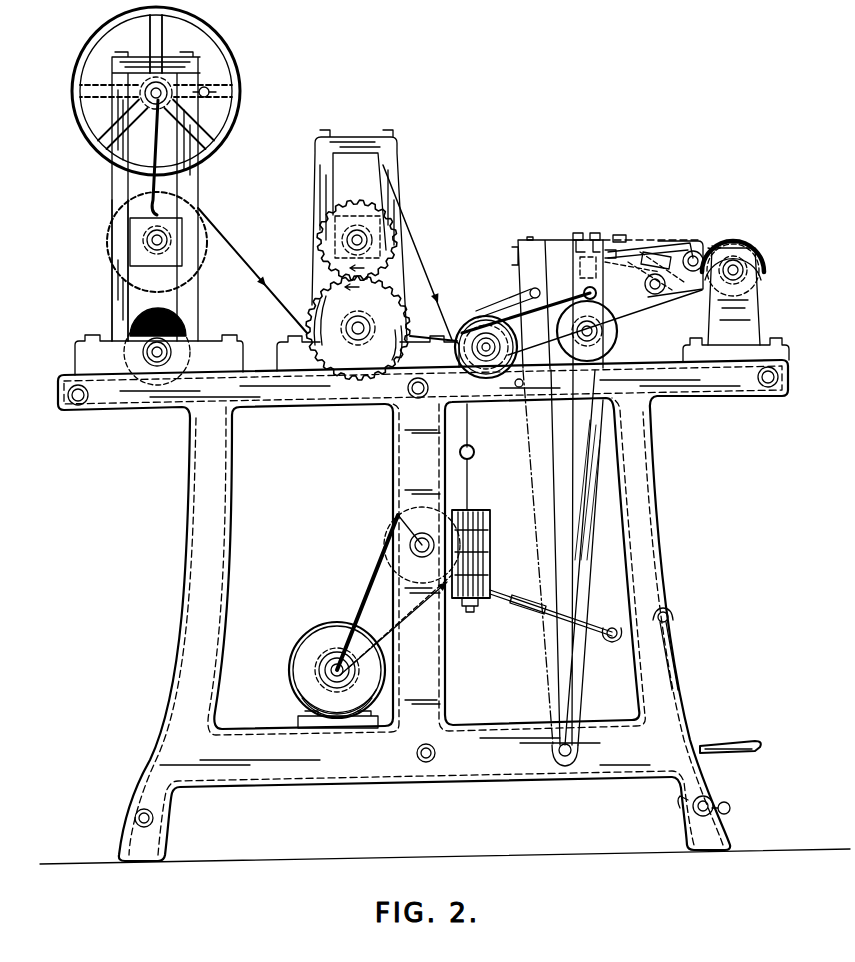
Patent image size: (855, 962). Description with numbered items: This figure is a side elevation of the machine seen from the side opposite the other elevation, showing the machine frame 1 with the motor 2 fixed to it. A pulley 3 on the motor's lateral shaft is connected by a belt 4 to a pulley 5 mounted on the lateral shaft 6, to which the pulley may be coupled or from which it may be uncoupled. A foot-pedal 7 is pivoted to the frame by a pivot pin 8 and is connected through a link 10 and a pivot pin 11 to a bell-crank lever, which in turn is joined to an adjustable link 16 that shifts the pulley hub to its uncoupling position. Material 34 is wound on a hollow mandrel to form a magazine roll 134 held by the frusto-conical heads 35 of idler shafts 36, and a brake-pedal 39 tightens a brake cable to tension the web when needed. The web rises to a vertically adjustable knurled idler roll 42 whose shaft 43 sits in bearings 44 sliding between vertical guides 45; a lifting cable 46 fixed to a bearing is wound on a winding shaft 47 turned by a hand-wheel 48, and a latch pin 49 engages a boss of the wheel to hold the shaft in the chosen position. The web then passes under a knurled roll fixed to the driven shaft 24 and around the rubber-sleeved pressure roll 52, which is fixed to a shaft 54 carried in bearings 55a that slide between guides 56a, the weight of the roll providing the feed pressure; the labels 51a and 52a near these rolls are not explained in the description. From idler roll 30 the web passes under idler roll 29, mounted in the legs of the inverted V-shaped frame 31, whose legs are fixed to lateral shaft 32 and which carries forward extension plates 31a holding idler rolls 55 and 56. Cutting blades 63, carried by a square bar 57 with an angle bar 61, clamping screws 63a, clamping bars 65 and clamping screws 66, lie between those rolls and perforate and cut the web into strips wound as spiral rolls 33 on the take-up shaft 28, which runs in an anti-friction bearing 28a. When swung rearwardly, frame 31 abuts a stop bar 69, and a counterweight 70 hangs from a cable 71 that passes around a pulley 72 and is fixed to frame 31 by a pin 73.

The frame 1 is at (652, 483).
The motor 2 is at (318, 632).
The pulley 3 is at (318, 668).
The belt 4 is at (370, 573).
The pulley 5 is at (392, 527).
The lateral shaft 6 is at (400, 515).
The foot-pedal 7 is at (730, 804).
The pivot pin 8 is at (698, 812).
The link 10 is at (675, 640).
The pivot pin 11 is at (670, 615).
The adjustable link 16 is at (540, 614).
The shaft 24 is at (352, 327).
The take-up shaft 28 is at (745, 273).
The anti-friction bearing 28a is at (748, 267).
The idler roll 29 is at (612, 337).
The idler roll 30 is at (464, 326).
The frame 31 is at (598, 440).
The forward extension plates 31a is at (688, 244).
The lateral shaft 32 is at (575, 748).
The spiral rolls 33 is at (757, 249).
The material 34 is at (232, 229).
The frusto-conical heads 35 is at (128, 345).
The idler shafts 36 is at (155, 362).
The brake-pedal 39 is at (750, 741).
The knurled idler roll 42 is at (108, 238).
The shaft 43 is at (150, 236).
The bearings 44 is at (142, 250).
The vertical guides 45 is at (122, 178).
The lifting cable 46 is at (182, 174).
The winding shaft 47 is at (150, 97).
The hand-wheel 48 is at (206, 44).
The latch pin 49 is at (212, 90).
The direction arrow 51a is at (337, 283).
The pressure roll 52 is at (578, 266).
The direction arrow 52a is at (342, 267).
The shaft 54 is at (347, 243).
The idler roll 55 is at (657, 296).
The bearings 55a is at (370, 223).
The idler roll 56 is at (698, 252).
The guides 56a is at (318, 170).
The square bar 57 is at (529, 233).
The angle bar 61 is at (573, 235).
The cutting blades 63 is at (676, 292).
The clamping screw 63a is at (593, 235).
The clamping bar 65 is at (642, 240).
The clamping screw 66 is at (620, 237).
The stop bar 69 is at (518, 392).
The counterweight 70 is at (488, 512).
The cable 71 is at (528, 293).
The pulley 72 is at (466, 346).
The pin 73 is at (598, 293).
The magazine roll 134 is at (138, 326).